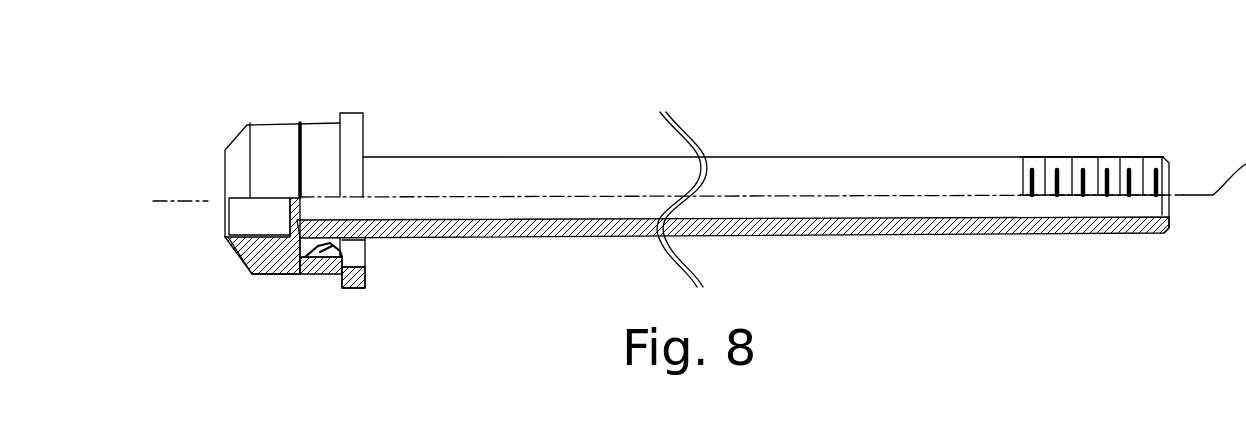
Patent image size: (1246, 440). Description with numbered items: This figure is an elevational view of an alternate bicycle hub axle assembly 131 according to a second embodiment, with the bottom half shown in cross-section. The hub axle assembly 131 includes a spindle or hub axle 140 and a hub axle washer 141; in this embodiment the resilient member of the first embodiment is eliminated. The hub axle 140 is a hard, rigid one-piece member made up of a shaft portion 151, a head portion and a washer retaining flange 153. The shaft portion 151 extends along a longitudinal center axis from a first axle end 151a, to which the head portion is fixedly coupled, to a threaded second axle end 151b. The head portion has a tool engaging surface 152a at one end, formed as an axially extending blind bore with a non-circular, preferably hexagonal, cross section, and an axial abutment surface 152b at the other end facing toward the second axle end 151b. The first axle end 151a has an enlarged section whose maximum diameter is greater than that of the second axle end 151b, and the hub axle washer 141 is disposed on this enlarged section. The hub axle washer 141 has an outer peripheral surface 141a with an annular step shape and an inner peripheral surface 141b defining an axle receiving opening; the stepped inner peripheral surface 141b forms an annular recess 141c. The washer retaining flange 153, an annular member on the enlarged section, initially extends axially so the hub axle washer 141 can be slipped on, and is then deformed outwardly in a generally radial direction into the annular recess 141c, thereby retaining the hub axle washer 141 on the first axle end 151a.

The hub axle assembly 131 is at (1030, 108).
The hub axle 140 is at (843, 156).
The hub axle washer 141 is at (368, 125).
The outer peripheral surface 141a is at (353, 288).
The inner peripheral surface 141b is at (299, 252).
The annular recess 141c is at (334, 247).
The shaft portion 151 is at (750, 157).
The first axle end 151a is at (403, 157).
The second axle end 151b is at (1113, 158).
The tool engaging surface 152a is at (216, 217).
The axial abutment surface 152b is at (301, 125).
The washer retaining flange 153 is at (330, 262).